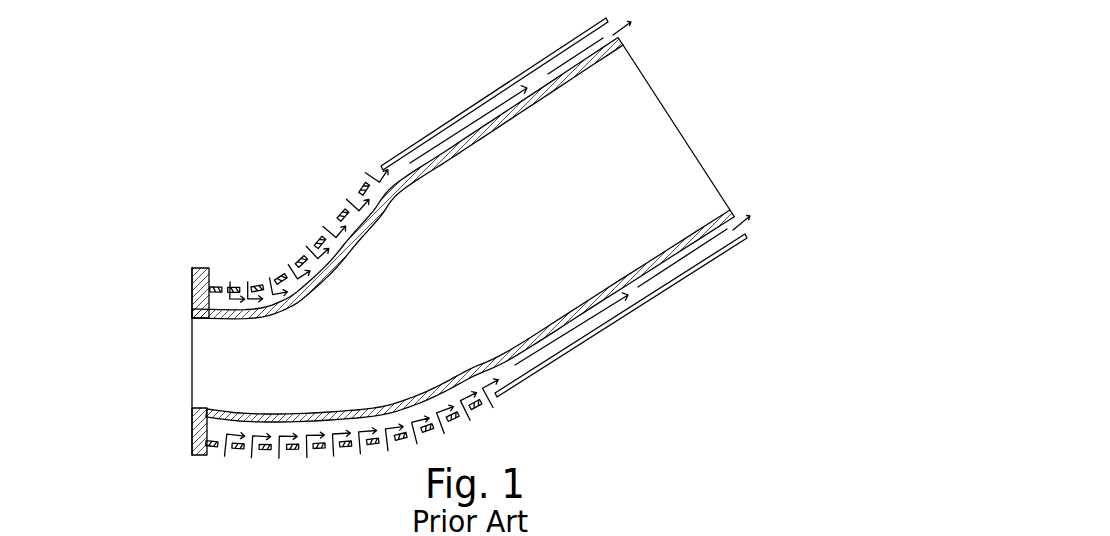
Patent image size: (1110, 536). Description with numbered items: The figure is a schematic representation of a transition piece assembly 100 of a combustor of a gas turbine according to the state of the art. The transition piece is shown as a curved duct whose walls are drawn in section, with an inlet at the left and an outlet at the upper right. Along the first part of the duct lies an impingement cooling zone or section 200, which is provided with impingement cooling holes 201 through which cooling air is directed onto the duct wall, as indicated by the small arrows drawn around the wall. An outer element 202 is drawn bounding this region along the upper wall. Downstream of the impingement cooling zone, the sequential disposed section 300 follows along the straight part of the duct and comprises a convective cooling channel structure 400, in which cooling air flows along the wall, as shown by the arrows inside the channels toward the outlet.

The transition piece assembly 100 is at (473, 83).
The impingement cooling zone 200 is at (299, 203).
The impingement cooling holes 201 is at (350, 197).
The outer bypass plate 202 is at (373, 163).
The sequential disposed section 300 is at (592, 362).
The convective cooling channel structure 400 is at (657, 287).